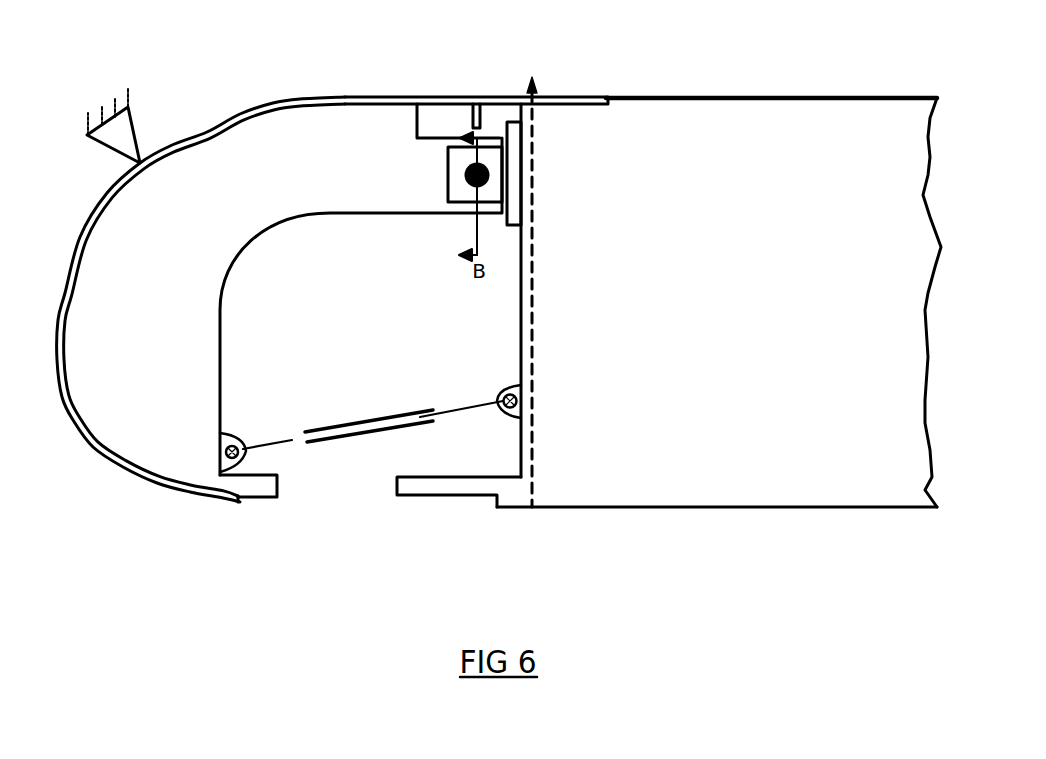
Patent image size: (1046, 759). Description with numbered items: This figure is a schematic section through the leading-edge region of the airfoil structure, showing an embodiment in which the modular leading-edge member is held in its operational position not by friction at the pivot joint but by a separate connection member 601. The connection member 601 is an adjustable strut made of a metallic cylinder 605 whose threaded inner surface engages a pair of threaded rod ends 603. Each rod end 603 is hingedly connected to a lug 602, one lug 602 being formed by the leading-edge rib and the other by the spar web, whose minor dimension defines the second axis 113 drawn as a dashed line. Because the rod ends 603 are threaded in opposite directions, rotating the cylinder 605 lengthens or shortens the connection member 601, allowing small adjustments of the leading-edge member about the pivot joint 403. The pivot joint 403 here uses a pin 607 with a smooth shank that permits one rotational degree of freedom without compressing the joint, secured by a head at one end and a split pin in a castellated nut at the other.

The second axis 113 is at (534, 378).
The pivot joint 403 is at (497, 130).
The pin 607 is at (480, 175).
The threaded rod end 603 is at (287, 440).
The cylinder 605 is at (367, 421).
The connection member 601 is at (358, 443).
The lug 602 is at (226, 462).